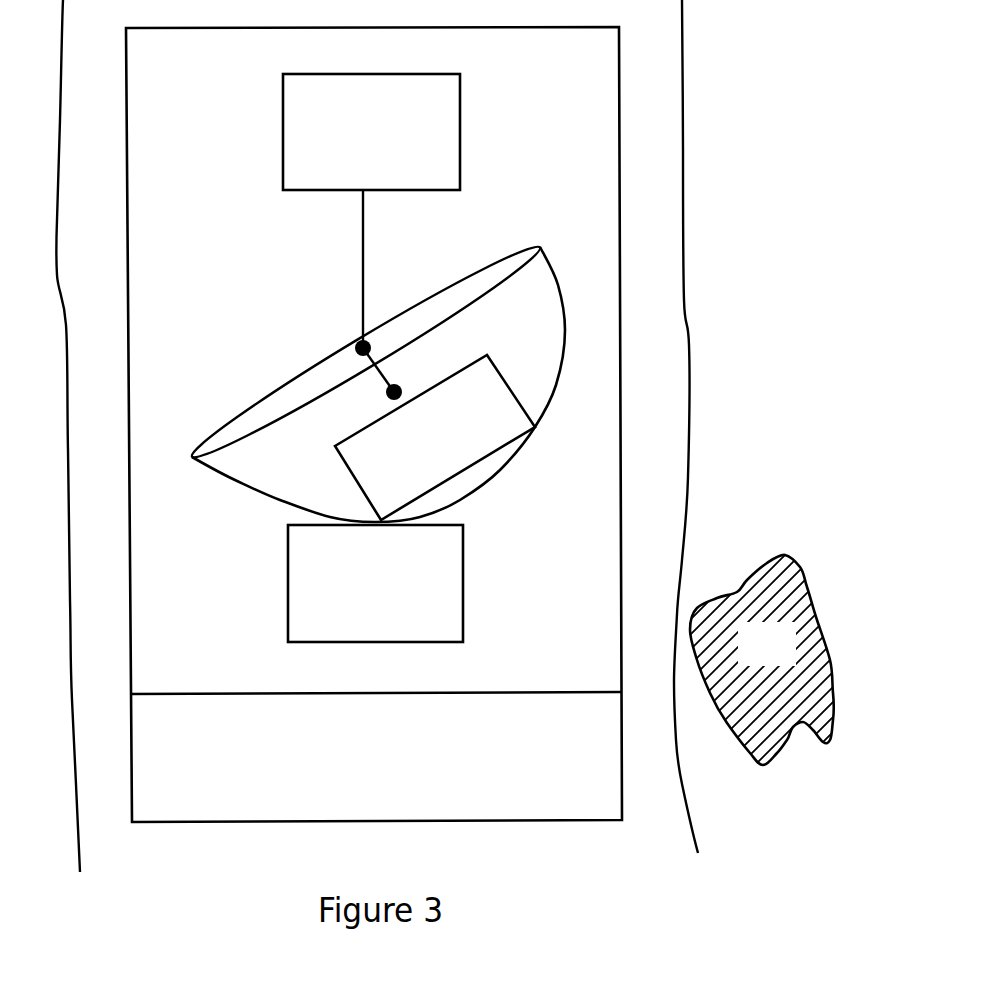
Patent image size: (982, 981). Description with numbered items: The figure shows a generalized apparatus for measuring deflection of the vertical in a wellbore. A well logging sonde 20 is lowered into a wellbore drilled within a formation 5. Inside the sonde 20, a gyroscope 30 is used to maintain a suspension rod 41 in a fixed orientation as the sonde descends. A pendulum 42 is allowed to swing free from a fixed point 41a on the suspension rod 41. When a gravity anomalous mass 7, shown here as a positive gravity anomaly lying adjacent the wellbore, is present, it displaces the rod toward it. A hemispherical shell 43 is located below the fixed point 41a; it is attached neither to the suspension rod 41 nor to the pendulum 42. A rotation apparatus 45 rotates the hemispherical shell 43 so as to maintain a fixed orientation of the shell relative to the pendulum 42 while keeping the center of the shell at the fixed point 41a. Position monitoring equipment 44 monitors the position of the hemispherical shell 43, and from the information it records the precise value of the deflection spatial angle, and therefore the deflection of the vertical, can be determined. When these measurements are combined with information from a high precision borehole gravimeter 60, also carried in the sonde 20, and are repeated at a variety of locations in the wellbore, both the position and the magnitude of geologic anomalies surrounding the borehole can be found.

The formation 5 is at (410, 436).
The gravity anomalous mass 7 is at (731, 657).
The well logging sonde 20 is at (620, 162).
The gyroscope 30 is at (371, 132).
The suspension rod 41 is at (342, 269).
The fixed point 41a is at (356, 343).
The pendulum 42 is at (380, 380).
The hemispherical shell 43 is at (388, 378).
The position monitoring equipment 44 is at (435, 437).
The rotation apparatus 45 is at (375, 583).
The borehole gravimeter 60 is at (375, 742).